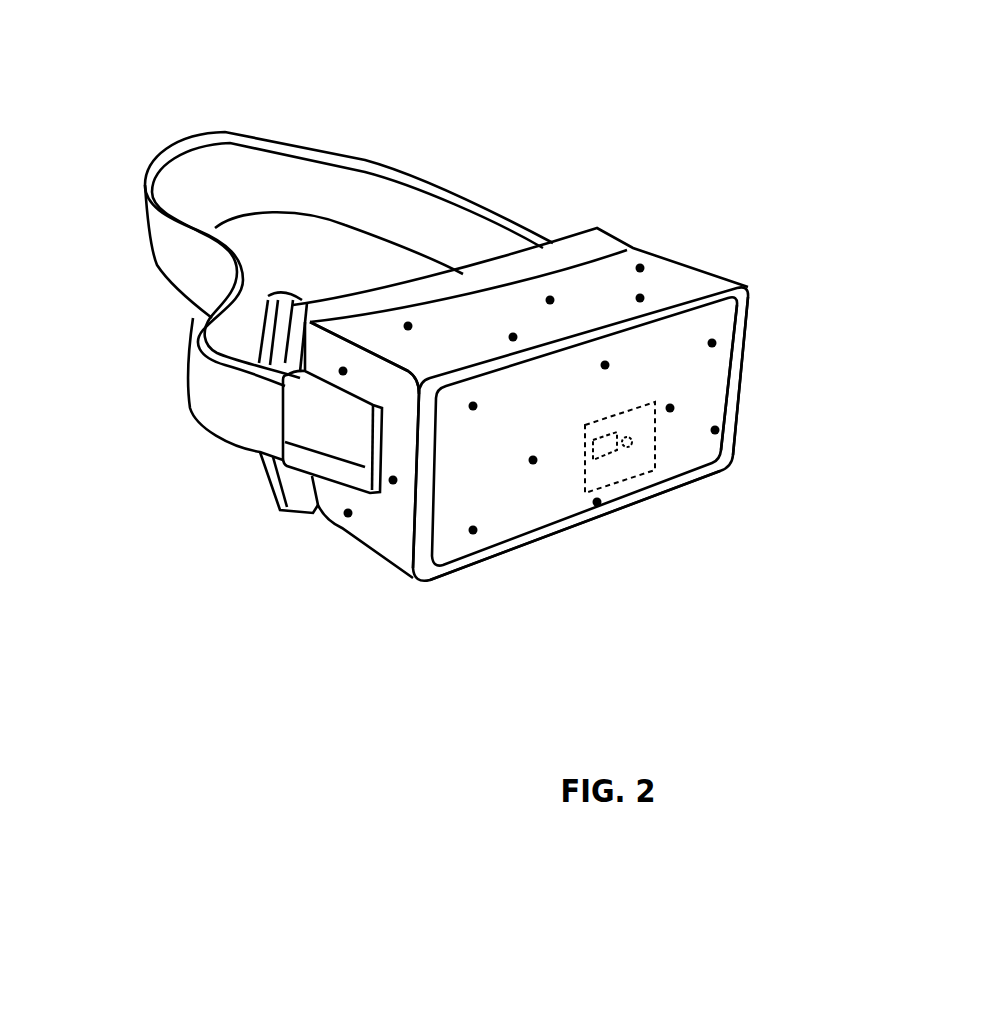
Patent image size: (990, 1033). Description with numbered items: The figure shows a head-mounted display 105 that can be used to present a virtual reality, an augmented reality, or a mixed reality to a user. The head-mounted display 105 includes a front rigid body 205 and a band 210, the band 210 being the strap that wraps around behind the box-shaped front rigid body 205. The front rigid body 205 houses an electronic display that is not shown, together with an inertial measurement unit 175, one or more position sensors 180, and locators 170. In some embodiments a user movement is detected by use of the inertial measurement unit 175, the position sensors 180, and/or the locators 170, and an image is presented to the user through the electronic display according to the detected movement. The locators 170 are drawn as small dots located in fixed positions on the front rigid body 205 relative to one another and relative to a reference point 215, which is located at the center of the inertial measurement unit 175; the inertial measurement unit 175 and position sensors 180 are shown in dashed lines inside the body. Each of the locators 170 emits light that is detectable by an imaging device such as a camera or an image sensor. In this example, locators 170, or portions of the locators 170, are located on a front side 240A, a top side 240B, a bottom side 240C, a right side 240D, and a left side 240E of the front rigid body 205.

The head-mounted display 105 is at (99, 150).
The front rigid body 205 is at (506, 424).
The band 210 is at (450, 198).
The front side 240A is at (462, 548).
The top side 240B is at (387, 327).
The bottom side 240C is at (347, 538).
The right side 240D is at (387, 512).
The left side 240E is at (713, 272).
The locators 170 is at (713, 430).
The inertial measurement unit 175 is at (650, 445).
The position sensors 180 is at (607, 455).
The reference point 215 is at (627, 448).